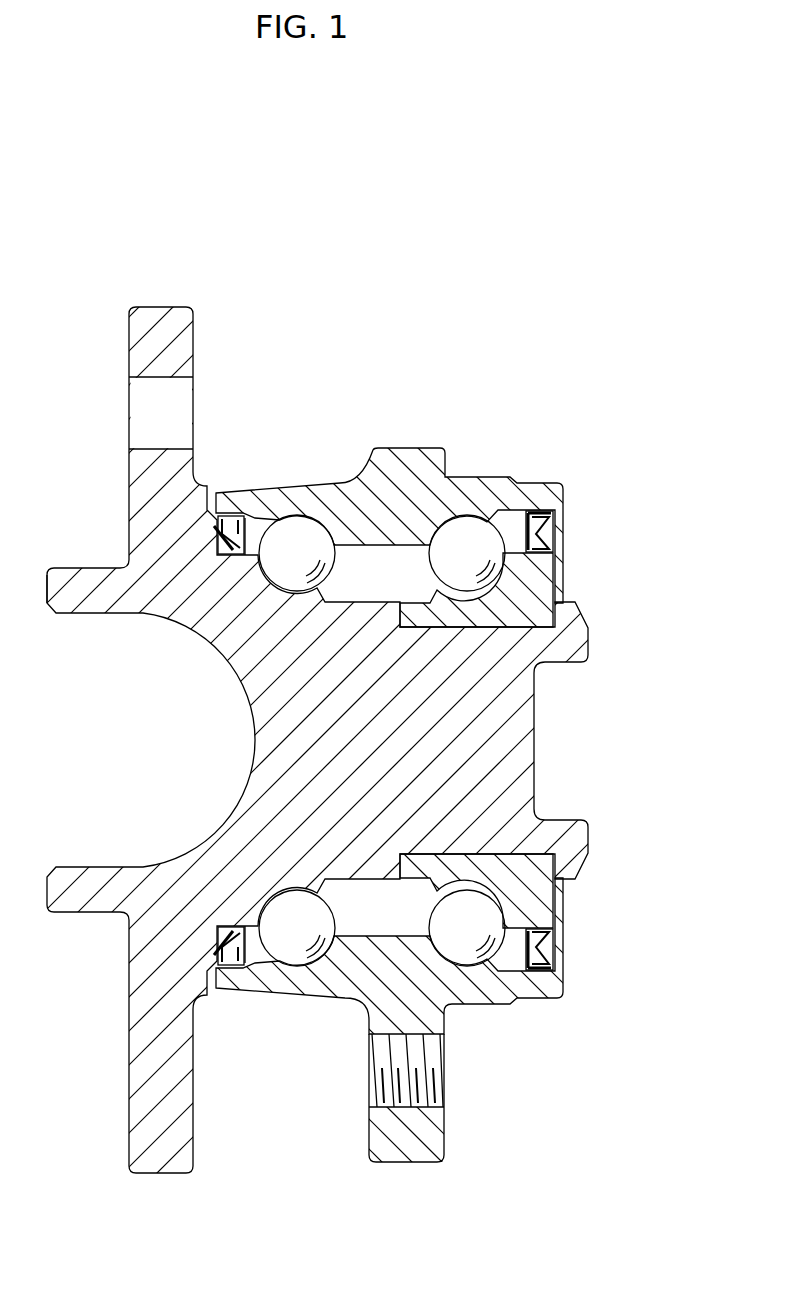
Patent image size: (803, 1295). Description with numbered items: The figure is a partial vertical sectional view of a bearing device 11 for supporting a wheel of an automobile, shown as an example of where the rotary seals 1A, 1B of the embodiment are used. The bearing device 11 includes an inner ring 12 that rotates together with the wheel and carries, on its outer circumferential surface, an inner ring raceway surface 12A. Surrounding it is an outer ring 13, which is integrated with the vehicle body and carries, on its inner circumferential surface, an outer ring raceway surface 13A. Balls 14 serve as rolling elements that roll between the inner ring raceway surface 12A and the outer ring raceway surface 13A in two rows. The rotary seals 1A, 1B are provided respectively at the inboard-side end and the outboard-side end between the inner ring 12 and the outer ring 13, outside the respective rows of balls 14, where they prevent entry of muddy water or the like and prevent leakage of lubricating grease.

The bearing device 11 is at (365, 407).
The inner ring 12 is at (500, 746).
The inner ring raceway surface 12A is at (492, 555).
The outer ring 13 is at (401, 750).
The outer ring raceway surface 13A is at (280, 523).
The balls 14 is at (445, 942).
The rotary seal 1A is at (565, 527).
The rotary seal 1B is at (246, 527).